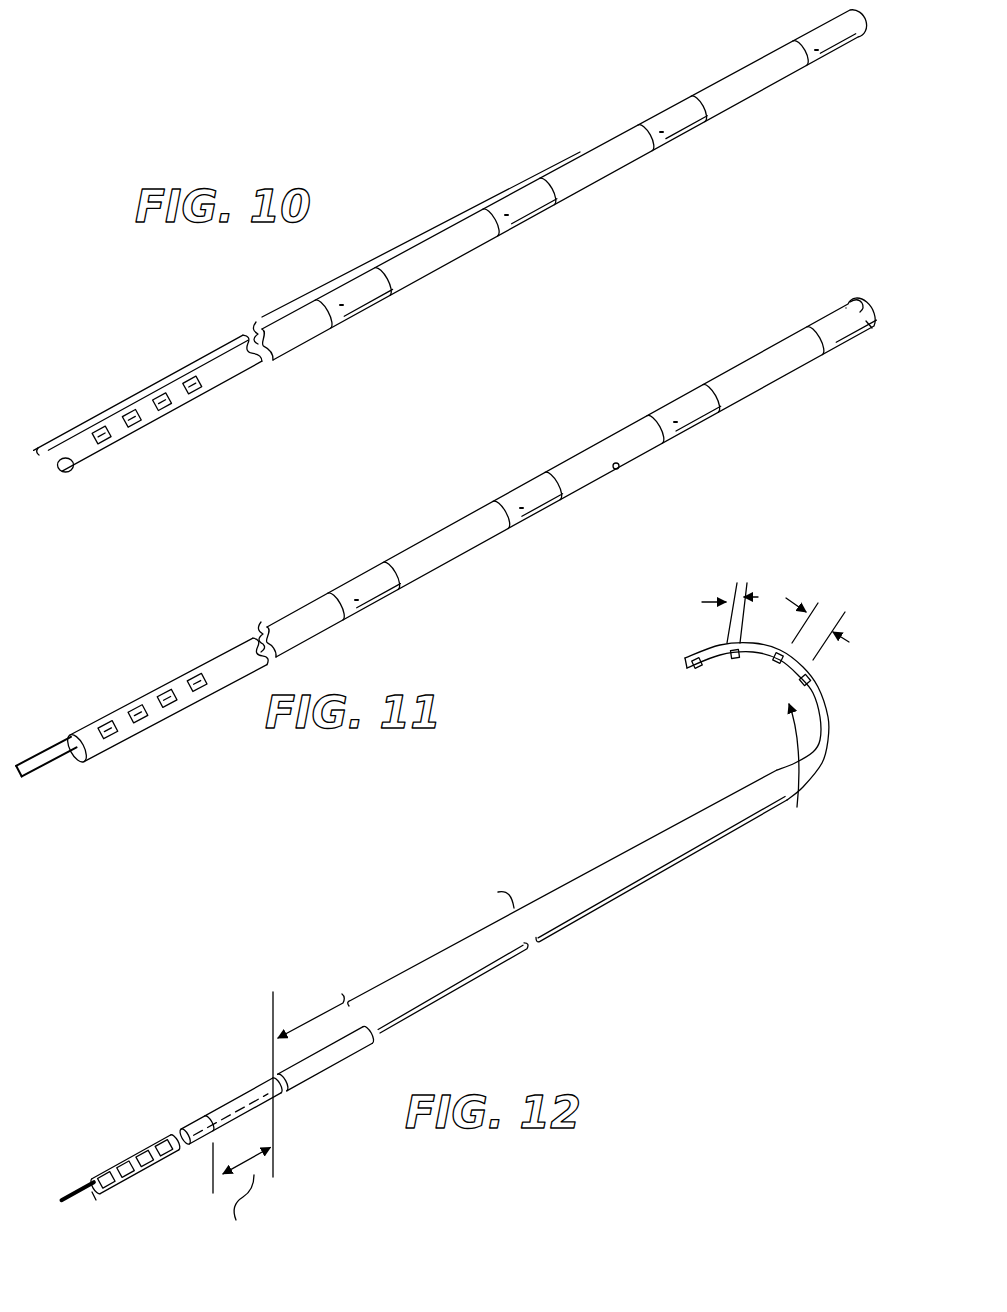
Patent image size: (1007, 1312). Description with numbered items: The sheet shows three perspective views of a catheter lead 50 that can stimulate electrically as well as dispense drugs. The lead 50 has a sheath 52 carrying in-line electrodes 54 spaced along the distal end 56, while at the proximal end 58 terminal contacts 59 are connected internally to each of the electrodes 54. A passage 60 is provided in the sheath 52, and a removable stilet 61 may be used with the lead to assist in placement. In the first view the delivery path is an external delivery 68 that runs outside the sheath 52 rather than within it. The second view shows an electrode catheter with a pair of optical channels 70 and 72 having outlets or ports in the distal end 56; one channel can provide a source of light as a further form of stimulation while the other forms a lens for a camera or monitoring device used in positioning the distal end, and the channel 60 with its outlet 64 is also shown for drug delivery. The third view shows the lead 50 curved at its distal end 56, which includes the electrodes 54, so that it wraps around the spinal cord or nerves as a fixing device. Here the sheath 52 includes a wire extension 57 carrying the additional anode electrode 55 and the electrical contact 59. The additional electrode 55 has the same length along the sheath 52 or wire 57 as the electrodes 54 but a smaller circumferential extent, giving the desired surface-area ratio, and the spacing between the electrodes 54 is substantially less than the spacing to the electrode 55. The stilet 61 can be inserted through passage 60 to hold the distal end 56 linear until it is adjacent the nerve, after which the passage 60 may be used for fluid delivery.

In FIG. 10, the catheter lead 50 is at (496, 164).
In FIG. 11, the catheter lead 50 is at (672, 364).
In FIG. 12, the catheter lead 50 is at (500, 744).
In FIG. 10, the sheath 52 is at (759, 93).
In FIG. 11, the sheath 52 is at (566, 477).
In FIG. 12, the sheath 52 is at (780, 806).
In FIG. 10, the electrodes 54 is at (359, 314).
In FIG. 11, the electrodes 54 is at (836, 347).
In FIG. 12, the electrodes 54 is at (697, 668).
In FIG. 12, the additional anode electrode 55 is at (236, 1094).
In FIG. 11, the distal end 56 is at (783, 296).
In FIG. 12, the distal end 56 is at (680, 663).
In FIG. 12, the wire extension 57 is at (333, 1063).
In FIG. 10, the proximal end 58 is at (118, 370).
In FIG. 11, the proximal end 58 is at (132, 676).
In FIG. 12, the proximal end 58 is at (142, 1095).
In FIG. 10, the terminal contacts 59 is at (135, 425).
In FIG. 11, the terminal contacts 59 is at (168, 706).
In FIG. 12, the terminal contacts 59 is at (166, 1144).
In FIG. 12, the passage 60 is at (95, 1205).
In FIG. 12, the stilet 61 is at (85, 1200).
In FIG. 11, the outlet 64 is at (613, 461).
In FIG. 10, the external delivery 68 is at (350, 272).
In FIG. 11, the optical channel 70 is at (870, 328).
In FIG. 11, the optical channel 72 is at (866, 306).